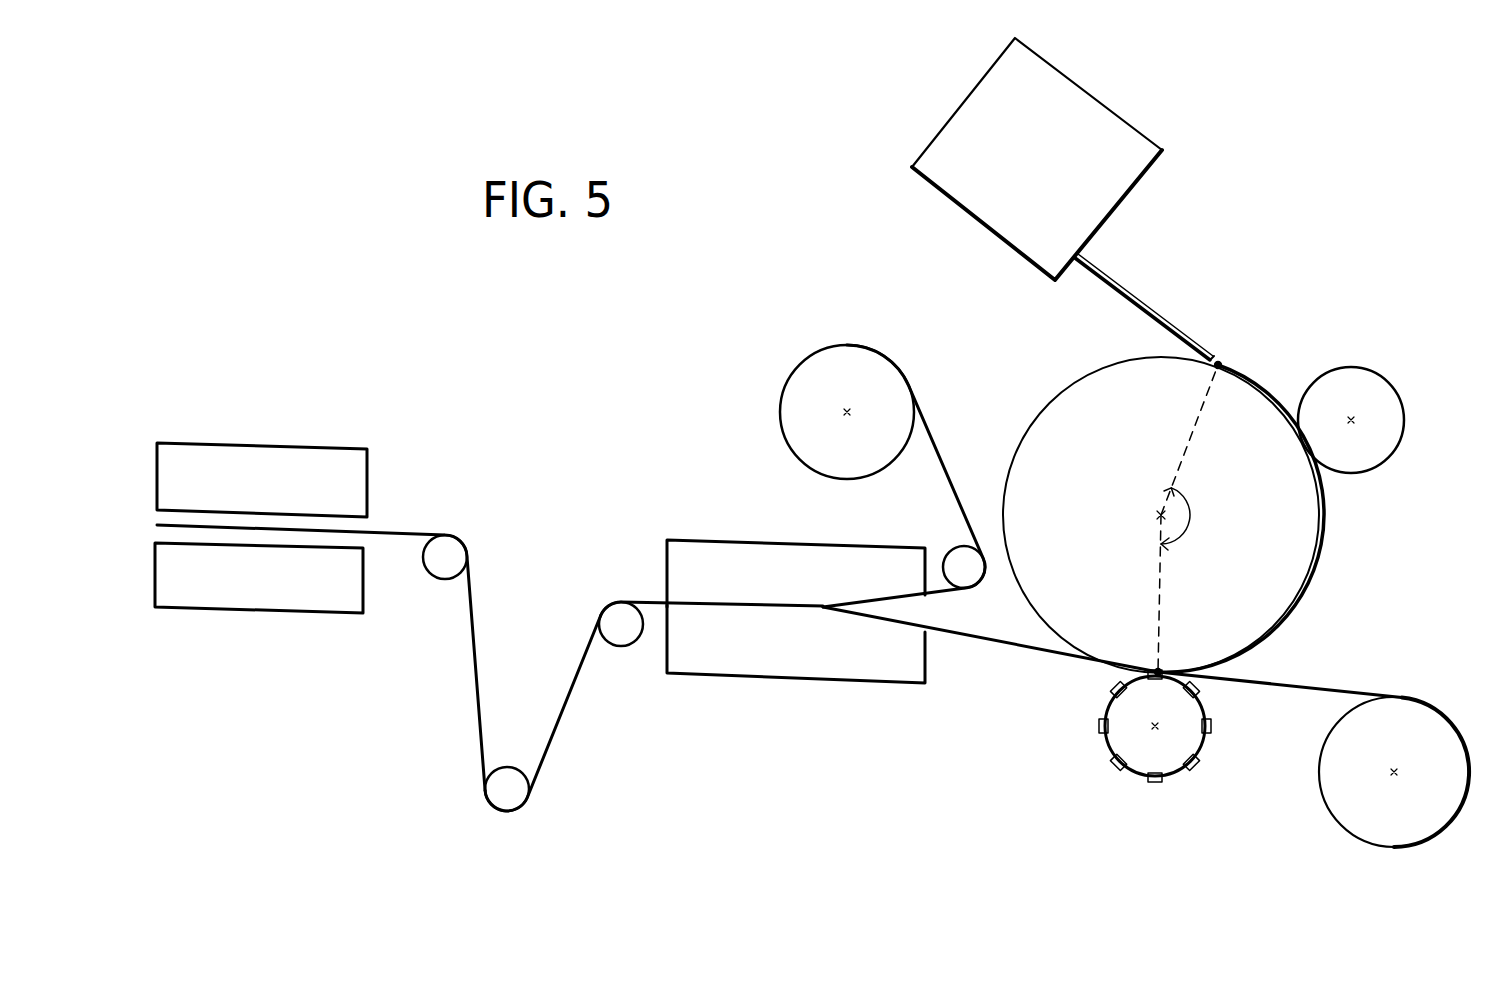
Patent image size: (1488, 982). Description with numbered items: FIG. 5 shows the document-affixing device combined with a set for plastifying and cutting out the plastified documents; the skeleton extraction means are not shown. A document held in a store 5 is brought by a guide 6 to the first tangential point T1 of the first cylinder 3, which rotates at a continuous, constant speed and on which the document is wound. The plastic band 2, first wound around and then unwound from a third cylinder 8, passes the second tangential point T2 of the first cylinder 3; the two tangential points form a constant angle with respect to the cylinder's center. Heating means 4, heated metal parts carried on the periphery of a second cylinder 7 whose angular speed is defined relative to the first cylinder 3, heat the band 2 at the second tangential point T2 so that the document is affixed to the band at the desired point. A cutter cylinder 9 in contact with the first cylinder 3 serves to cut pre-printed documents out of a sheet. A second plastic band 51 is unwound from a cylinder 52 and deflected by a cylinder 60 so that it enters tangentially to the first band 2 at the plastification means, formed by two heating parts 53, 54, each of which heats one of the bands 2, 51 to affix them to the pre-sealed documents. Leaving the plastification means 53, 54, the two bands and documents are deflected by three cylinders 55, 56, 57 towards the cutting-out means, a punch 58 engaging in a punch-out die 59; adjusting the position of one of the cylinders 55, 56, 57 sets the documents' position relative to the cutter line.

The plastic band 2 is at (1328, 689).
The first cylinder 3 is at (1300, 538).
The heating means 4 is at (1186, 739).
The store 5 is at (1107, 193).
The guide 6 is at (1135, 297).
The second cylinder 7 is at (1165, 758).
The third cylinder 8 is at (1437, 741).
The cutter cylinder 9 is at (1385, 400).
The second plastic band 51 is at (940, 448).
The cylinder 52 is at (887, 377).
The heating part 53 is at (745, 555).
The heating part 54 is at (843, 663).
The cylinder 55 is at (615, 632).
The cylinder 56 is at (515, 795).
The cylinder 57 is at (450, 560).
The punch 58 is at (322, 463).
The punch-out die 59 is at (317, 600).
The cylinder 60 is at (962, 562).
The first tangential point T1 is at (1220, 363).
The second tangential point T2 is at (1160, 668).